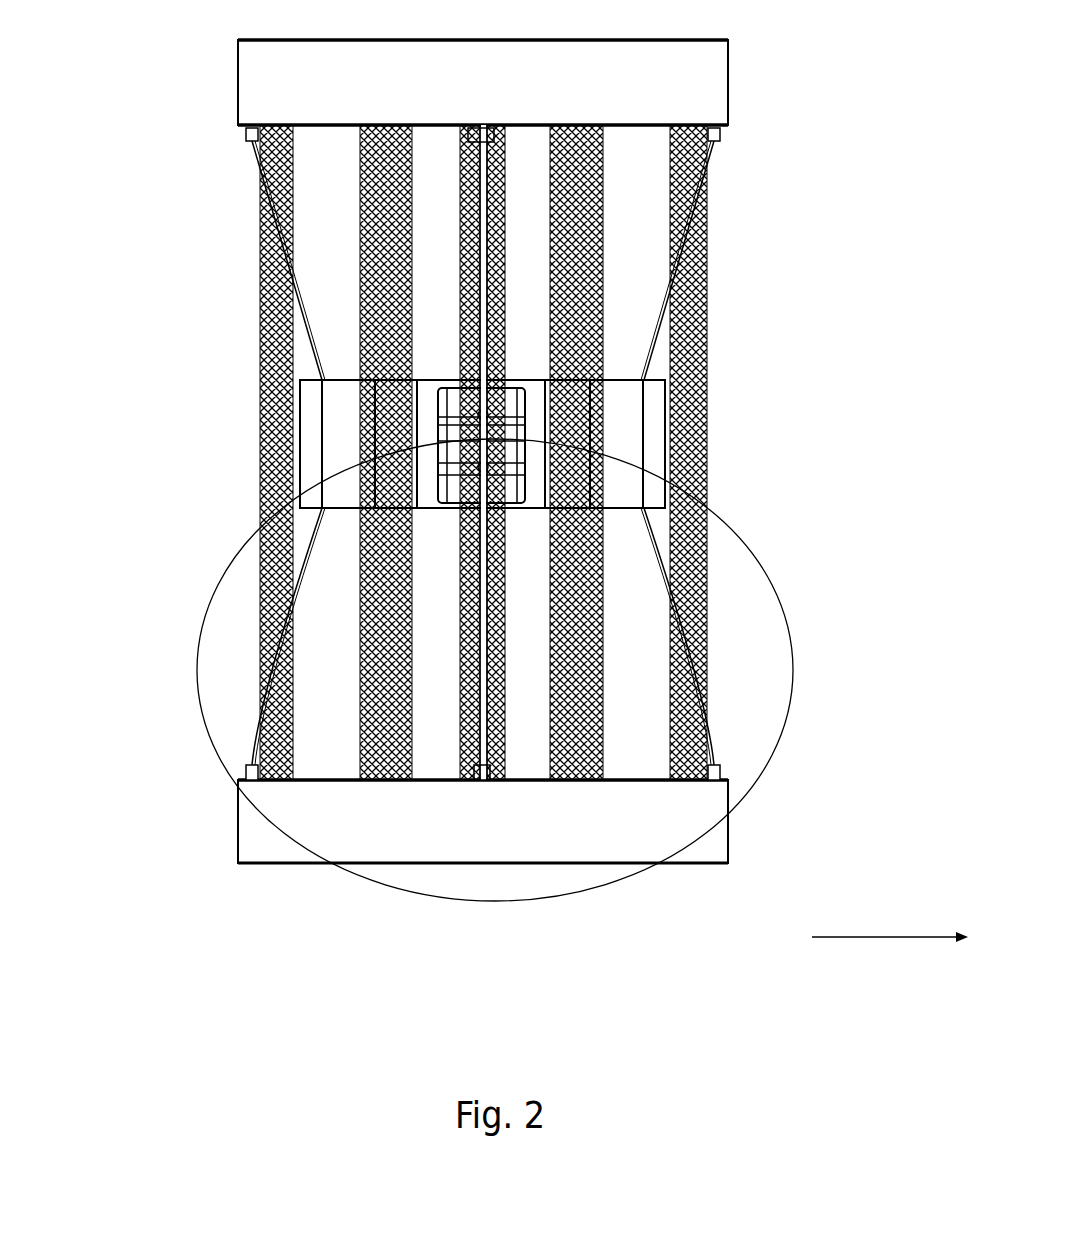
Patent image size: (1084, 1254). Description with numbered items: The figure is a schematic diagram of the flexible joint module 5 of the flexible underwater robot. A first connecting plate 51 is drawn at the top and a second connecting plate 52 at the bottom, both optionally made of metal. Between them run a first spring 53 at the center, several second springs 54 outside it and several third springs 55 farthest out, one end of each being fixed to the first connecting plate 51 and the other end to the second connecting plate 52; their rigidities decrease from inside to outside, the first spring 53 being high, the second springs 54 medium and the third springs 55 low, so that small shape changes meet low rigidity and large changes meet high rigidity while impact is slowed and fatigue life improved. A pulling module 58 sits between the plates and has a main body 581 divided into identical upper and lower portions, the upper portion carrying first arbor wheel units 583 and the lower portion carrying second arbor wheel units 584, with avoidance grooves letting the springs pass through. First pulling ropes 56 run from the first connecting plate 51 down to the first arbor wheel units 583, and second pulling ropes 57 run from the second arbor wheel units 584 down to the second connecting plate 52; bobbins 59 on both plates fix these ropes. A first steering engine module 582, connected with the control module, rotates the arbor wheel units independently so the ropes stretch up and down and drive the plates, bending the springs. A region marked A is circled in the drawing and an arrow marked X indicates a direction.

The flexible joint module 5 is at (62, 114).
The first connecting plate 51 is at (707, 78).
The second connecting plate 52 is at (568, 822).
The first spring 53 is at (500, 718).
The second springs 54 is at (370, 236).
The third springs 55 is at (268, 318).
The first pulling ropes 56 is at (293, 305).
The second pulling ropes 57 is at (485, 502).
The pulling module 58 is at (475, 452).
The main body 581 is at (665, 455).
The first steering engine module 582 is at (345, 458).
The first arbor wheel units 583 is at (483, 415).
The second arbor wheel units 584 is at (481, 470).
The bobbins 59 is at (247, 132).
The region A is at (795, 673).
The X direction X is at (890, 918).